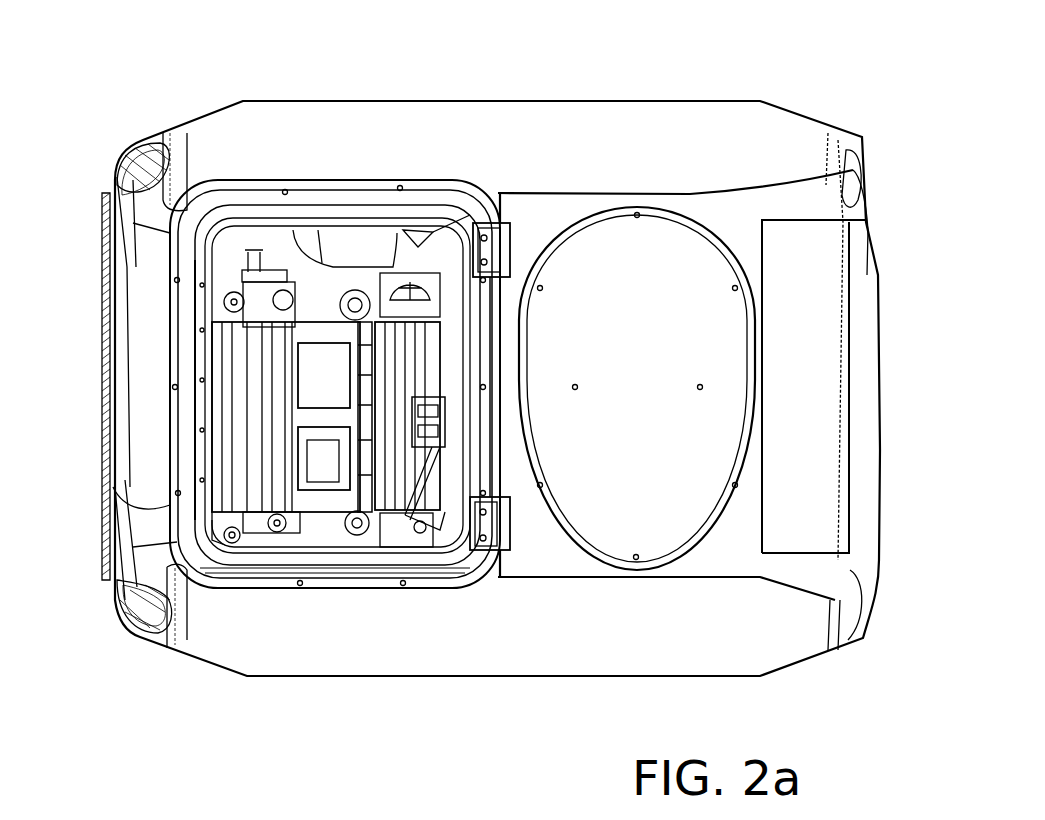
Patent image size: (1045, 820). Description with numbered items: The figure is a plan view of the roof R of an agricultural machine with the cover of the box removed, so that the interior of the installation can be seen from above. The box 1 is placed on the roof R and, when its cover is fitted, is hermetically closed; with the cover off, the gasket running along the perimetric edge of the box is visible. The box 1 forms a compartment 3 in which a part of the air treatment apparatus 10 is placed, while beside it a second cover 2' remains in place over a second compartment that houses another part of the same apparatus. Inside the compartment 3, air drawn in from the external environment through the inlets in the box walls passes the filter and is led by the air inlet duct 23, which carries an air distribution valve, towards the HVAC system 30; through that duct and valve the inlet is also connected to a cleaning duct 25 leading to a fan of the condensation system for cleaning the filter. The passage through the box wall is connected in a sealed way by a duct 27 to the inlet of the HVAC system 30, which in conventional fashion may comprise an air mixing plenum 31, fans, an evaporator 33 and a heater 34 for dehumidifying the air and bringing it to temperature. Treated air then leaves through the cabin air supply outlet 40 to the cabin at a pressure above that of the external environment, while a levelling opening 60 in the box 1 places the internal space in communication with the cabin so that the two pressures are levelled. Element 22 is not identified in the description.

The box 1 is at (323, 174).
The roof R is at (704, 98).
The second cover 2' is at (677, 330).
The compartment 3 is at (225, 183).
The air treatment apparatus 10 is at (190, 432).
The seal 22 is at (358, 222).
The air inlet duct 23 is at (465, 208).
The cleaning duct 25 is at (507, 235).
The duct 27 is at (425, 530).
The HVAC system 30 is at (287, 573).
The air mixing plenum 31 is at (450, 378).
The evaporator 33 is at (317, 500).
The heater 34 is at (233, 585).
The cabin air supply outlet 40 is at (187, 373).
The levelling opening 60 is at (372, 548).